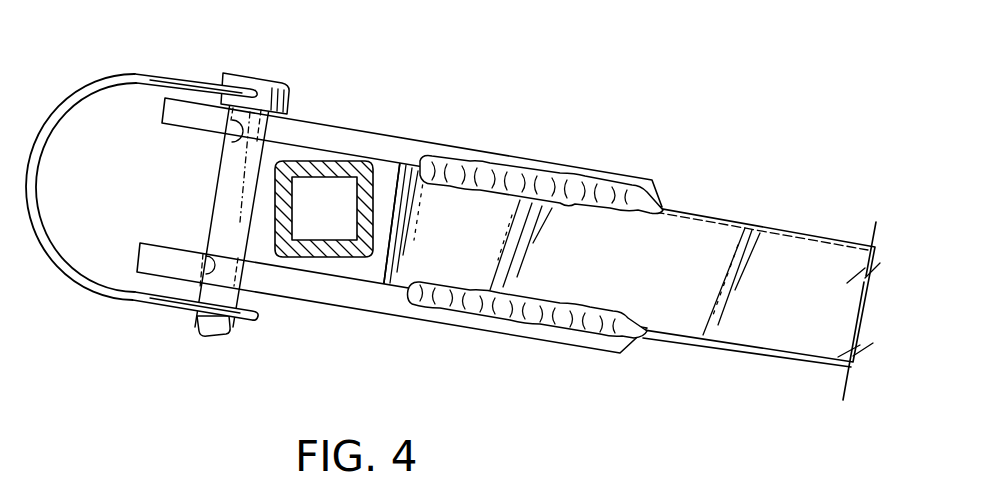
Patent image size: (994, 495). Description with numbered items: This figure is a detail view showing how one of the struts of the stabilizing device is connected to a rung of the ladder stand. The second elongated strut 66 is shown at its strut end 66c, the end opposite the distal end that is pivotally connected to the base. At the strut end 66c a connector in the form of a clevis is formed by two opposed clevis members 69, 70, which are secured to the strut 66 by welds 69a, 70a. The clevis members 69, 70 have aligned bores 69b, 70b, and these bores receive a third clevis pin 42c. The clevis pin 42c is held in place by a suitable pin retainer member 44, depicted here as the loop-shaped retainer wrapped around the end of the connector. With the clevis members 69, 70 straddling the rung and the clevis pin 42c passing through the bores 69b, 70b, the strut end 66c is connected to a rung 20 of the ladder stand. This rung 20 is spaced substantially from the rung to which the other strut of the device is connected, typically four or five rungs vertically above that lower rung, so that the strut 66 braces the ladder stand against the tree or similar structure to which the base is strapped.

The rung 20 is at (335, 258).
The third clevis pin 42c is at (290, 192).
The pin retainer member 44 is at (70, 287).
The second elongated strut 66 is at (783, 357).
The strut end 66c is at (399, 184).
The clevis member 69 is at (533, 160).
The weld 69a is at (597, 204).
The bore 69b is at (238, 143).
The clevis member 70 is at (388, 315).
The weld 70a is at (546, 312).
The bore 70b is at (214, 260).